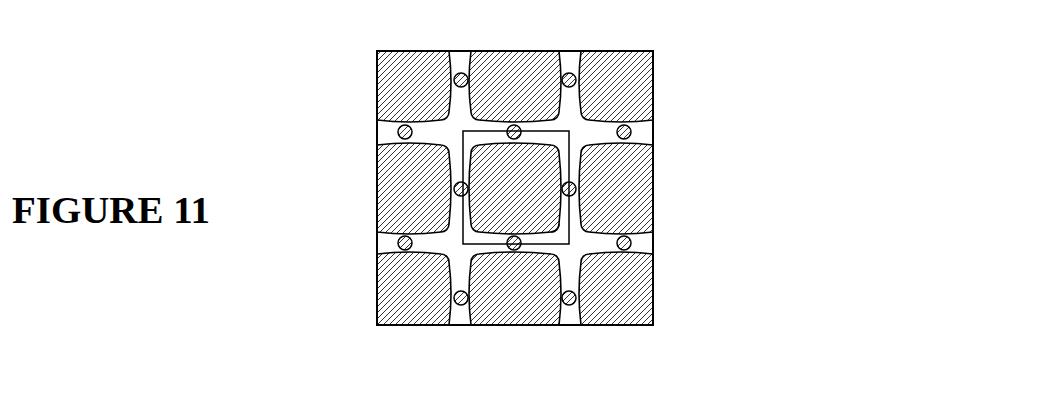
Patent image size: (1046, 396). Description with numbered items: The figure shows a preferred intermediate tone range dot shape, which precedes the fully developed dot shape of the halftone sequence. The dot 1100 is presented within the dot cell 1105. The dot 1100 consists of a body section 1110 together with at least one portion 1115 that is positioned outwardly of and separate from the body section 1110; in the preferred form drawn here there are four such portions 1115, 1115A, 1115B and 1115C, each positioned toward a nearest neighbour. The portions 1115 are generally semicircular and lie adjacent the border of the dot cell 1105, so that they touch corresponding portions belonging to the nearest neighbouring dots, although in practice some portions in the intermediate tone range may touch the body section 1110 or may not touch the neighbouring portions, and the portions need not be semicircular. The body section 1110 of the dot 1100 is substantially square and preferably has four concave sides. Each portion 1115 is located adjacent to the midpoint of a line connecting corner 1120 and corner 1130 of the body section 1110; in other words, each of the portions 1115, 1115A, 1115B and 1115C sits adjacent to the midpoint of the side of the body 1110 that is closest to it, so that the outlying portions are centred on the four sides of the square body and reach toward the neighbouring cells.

The dot 1100 is at (597, 175).
The dot cell 1105 is at (415, 257).
The body section 1110 is at (512, 204).
The portion 1115 is at (568, 196).
The portion 1115A is at (516, 125).
The portion 1115B is at (462, 182).
The portion 1115C is at (507, 243).
The corner 1120 is at (473, 148).
The corner 1130 is at (563, 226).